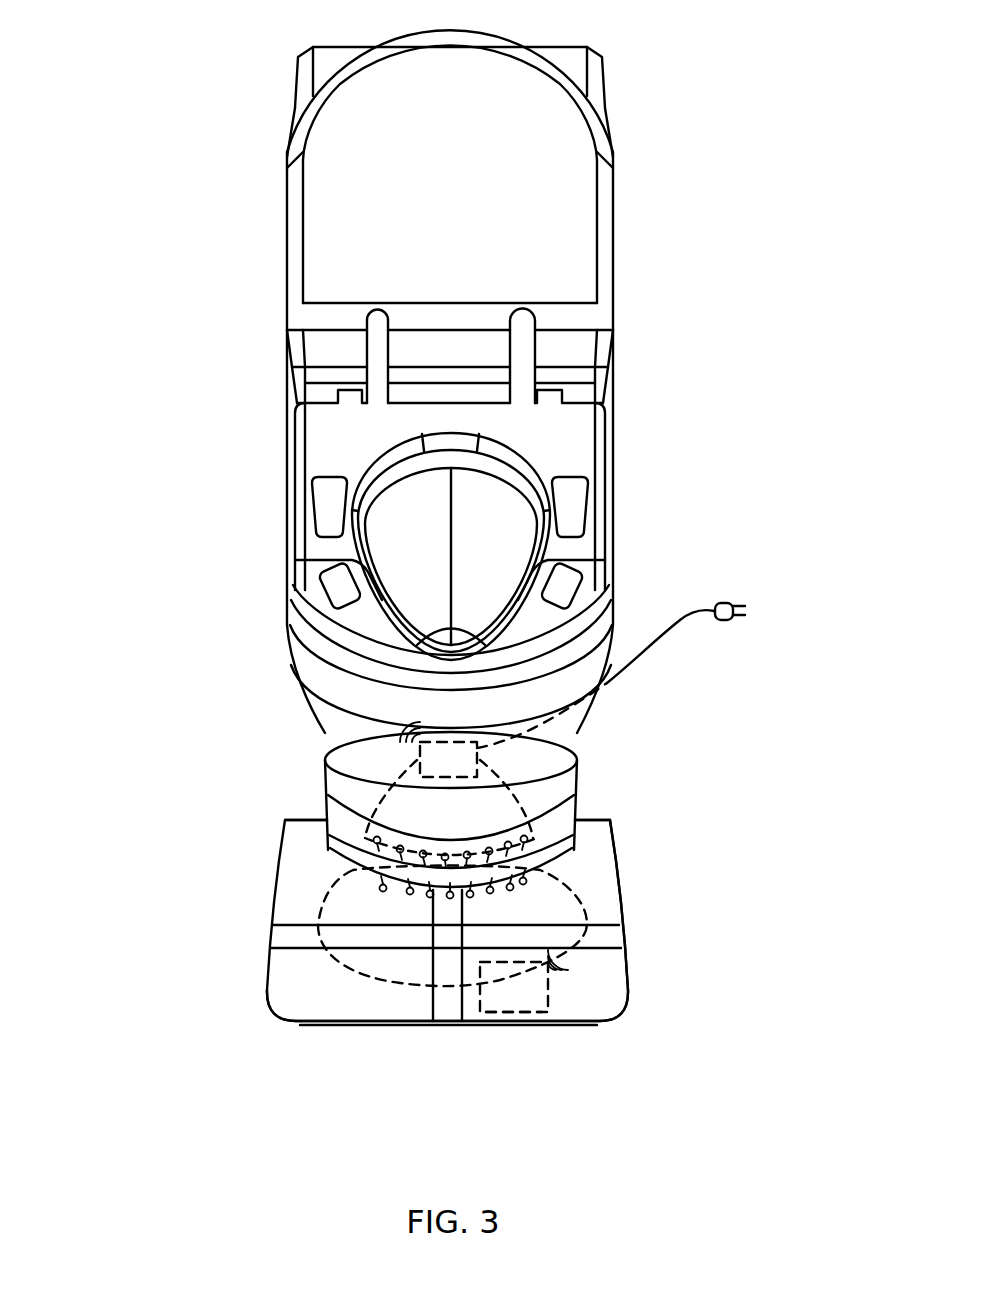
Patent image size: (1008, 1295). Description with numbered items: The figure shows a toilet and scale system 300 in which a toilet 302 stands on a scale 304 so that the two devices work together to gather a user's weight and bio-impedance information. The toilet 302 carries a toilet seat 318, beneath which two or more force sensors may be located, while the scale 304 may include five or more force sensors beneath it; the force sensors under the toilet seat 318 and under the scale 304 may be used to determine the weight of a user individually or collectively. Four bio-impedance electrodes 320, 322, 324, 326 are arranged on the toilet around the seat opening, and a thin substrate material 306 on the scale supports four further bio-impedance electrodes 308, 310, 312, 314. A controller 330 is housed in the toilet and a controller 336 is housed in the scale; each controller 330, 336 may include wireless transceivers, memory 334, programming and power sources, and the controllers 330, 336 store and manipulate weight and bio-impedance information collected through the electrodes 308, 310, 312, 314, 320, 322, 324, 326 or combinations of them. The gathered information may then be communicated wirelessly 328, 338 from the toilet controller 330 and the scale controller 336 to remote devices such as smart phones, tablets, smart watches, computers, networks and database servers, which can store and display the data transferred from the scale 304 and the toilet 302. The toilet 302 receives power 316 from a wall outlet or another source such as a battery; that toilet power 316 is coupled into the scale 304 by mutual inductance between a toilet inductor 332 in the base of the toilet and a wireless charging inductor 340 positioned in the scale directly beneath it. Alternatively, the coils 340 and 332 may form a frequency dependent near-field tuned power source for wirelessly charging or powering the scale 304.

The toilet and scale system 300 is at (178, 118).
The toilet 302 is at (283, 327).
The scale 304 is at (392, 1040).
The thin substrate material 306 is at (277, 935).
The bio-impedance electrode 308 is at (293, 888).
The bio-impedance electrode 310 is at (320, 1002).
The bio-impedance electrode 312 is at (597, 853).
The bio-impedance electrode 314 is at (610, 962).
The toilet power 316 is at (723, 620).
The toilet seat 318 is at (323, 443).
The bio-impedance electrode 320 is at (322, 508).
The bio-impedance electrode 322 is at (337, 590).
The bio-impedance electrode 324 is at (575, 508).
The bio-impedance electrode 326 is at (570, 580).
The wireless communication 328 is at (405, 733).
The controller 330 is at (420, 752).
The toilet inductor 332 is at (360, 846).
The memory 334 is at (503, 1012).
The controller 336 is at (548, 993).
The wireless communication 338 is at (577, 975).
The wireless charging inductor 340 is at (360, 877).